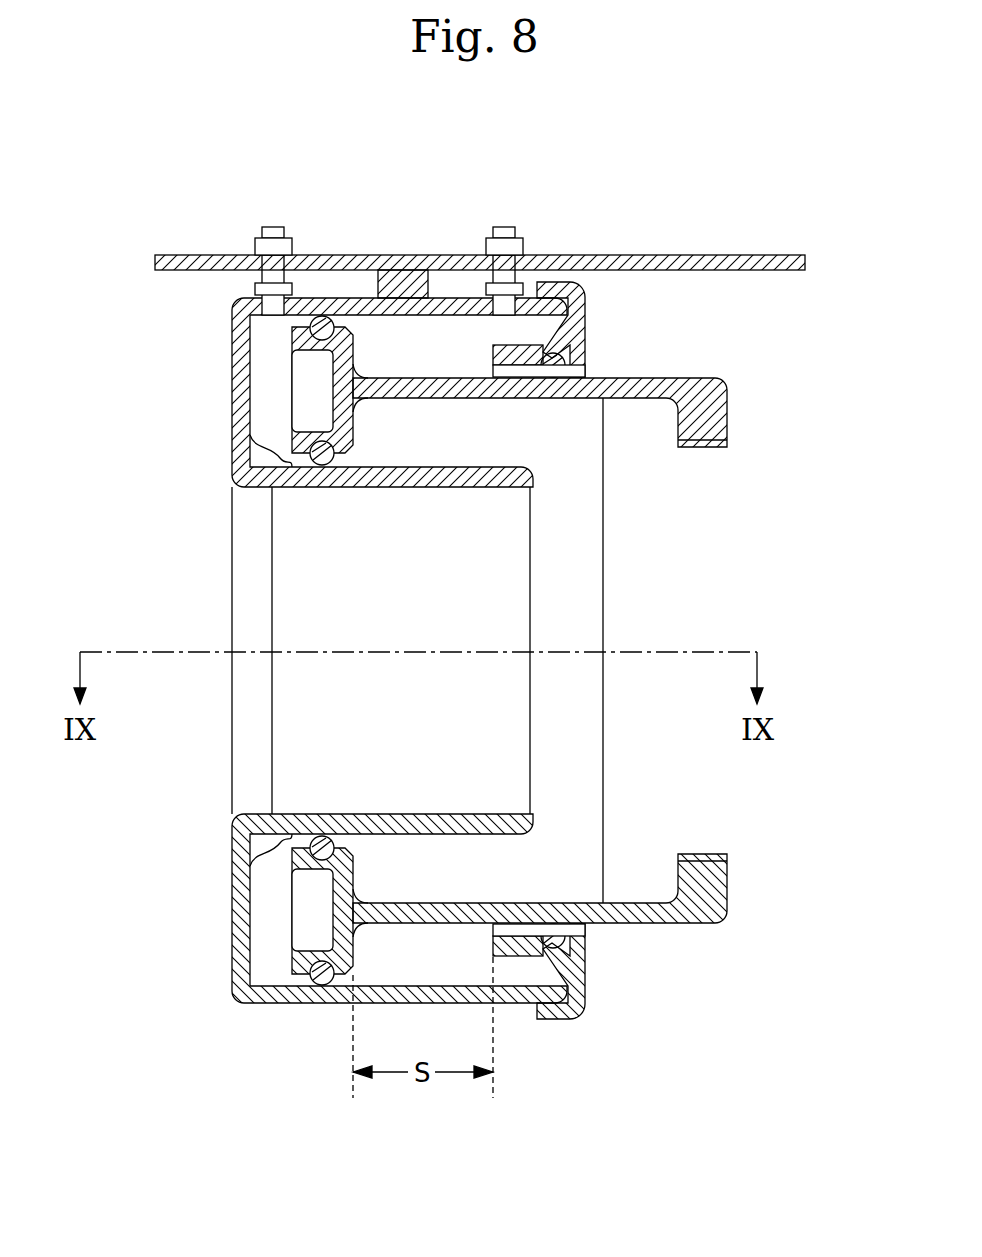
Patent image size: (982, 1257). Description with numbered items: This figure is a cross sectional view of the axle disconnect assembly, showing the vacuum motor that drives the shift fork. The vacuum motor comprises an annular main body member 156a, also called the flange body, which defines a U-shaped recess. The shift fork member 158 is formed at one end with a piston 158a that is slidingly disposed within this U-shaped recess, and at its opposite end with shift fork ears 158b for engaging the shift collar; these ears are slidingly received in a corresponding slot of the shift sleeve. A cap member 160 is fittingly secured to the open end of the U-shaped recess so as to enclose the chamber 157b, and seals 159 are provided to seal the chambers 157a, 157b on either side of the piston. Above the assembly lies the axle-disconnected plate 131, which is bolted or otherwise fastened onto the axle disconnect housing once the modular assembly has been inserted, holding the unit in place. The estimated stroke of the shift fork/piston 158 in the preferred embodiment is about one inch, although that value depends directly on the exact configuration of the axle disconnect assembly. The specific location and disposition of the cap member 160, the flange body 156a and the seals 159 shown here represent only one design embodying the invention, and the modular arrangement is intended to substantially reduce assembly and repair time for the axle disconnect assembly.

The axle-disconnected plate 131 is at (674, 255).
The annular main body member 156a is at (232, 955).
The chamber 157a is at (270, 378).
The chamber 157b is at (411, 352).
The shift fork member 158 is at (536, 398).
The piston 158a is at (725, 423).
The shift fork ears 158b is at (725, 872).
The seals 159 is at (562, 362).
The cap member 160 is at (586, 318).